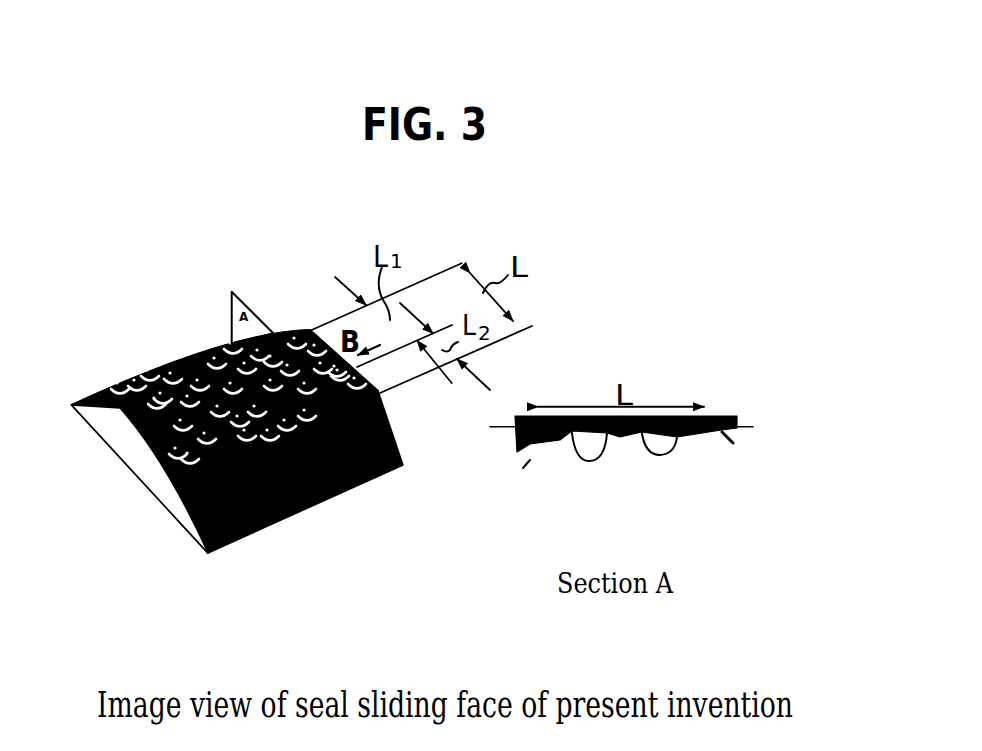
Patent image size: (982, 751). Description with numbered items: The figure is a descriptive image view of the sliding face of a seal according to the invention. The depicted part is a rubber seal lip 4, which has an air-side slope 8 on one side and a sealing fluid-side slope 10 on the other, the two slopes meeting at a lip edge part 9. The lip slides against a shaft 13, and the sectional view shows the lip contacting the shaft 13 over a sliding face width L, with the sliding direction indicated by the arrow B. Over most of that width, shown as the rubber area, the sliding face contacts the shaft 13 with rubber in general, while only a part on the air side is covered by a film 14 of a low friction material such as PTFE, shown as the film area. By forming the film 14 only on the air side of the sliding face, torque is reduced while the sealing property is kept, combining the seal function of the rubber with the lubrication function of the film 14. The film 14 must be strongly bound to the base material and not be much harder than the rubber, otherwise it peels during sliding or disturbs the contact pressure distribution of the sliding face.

The rubber seal lip 4 is at (137, 467).
The air-side slope 8 is at (320, 502).
The lip edge part 9 is at (137, 432).
The sealing fluid-side slope 10 is at (180, 380).
The shaft 13 is at (737, 420).
The film 14 is at (177, 462).